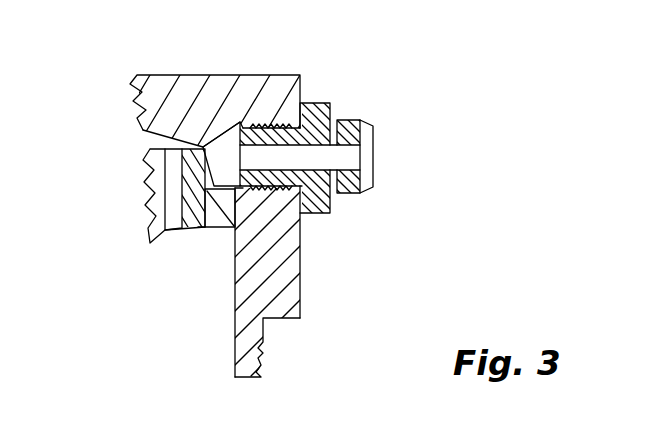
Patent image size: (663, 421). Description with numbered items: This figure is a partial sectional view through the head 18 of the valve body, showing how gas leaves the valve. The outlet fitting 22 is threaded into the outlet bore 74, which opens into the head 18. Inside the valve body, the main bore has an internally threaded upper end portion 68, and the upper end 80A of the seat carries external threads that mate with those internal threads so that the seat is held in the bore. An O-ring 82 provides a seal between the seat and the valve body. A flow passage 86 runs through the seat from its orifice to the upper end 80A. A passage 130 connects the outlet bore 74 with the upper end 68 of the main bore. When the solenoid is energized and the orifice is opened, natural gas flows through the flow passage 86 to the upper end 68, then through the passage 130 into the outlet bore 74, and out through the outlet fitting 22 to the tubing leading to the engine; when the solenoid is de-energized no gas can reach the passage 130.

The internally threaded upper end portion 68 is at (175, 133).
The passage 130 is at (228, 140).
The outlet fitting 22 is at (330, 94).
The upper end of seat 80A is at (145, 162).
The flow passage 86 is at (170, 232).
The O-ring 82 is at (217, 230).
The outlet port 74 is at (262, 192).
The hexagonal head 18 is at (276, 310).